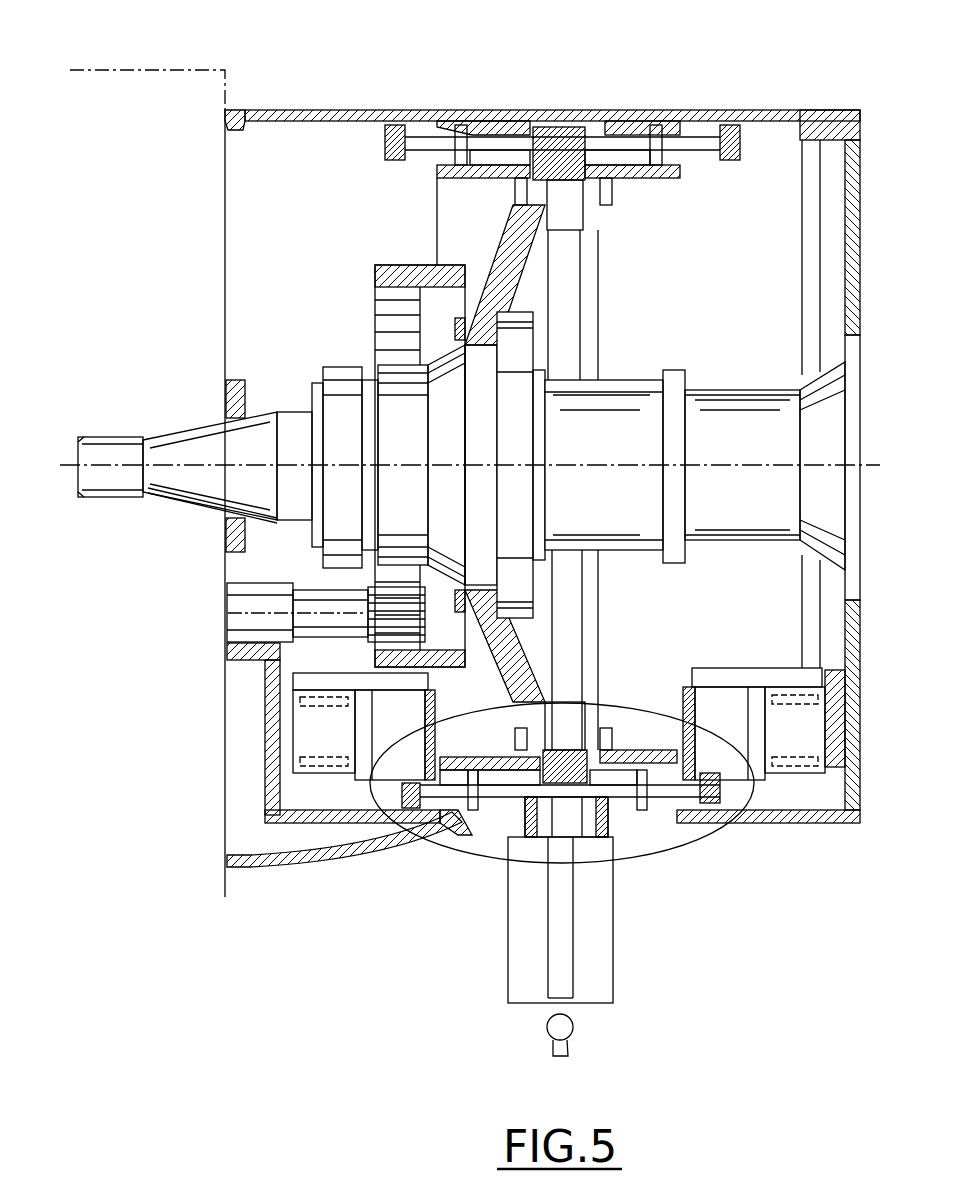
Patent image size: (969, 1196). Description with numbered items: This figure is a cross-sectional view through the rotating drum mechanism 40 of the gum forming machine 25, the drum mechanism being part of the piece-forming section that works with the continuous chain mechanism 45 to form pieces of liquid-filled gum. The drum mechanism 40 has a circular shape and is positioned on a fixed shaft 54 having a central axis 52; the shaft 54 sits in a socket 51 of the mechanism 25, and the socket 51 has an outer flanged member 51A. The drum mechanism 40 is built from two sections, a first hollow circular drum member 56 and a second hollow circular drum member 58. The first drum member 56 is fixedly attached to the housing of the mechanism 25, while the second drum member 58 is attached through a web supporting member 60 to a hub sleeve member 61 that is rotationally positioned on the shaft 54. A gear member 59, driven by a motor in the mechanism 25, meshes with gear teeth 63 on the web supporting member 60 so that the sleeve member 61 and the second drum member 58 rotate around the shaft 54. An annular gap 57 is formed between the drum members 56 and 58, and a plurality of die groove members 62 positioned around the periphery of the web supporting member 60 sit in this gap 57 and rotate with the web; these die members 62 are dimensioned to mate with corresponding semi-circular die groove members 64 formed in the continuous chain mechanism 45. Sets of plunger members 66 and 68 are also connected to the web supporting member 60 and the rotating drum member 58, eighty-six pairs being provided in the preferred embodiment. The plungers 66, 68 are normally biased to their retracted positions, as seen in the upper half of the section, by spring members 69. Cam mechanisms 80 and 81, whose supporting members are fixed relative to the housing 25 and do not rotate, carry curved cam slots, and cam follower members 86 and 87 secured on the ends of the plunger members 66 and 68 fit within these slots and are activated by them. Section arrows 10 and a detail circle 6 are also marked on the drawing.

The gum forming machine 25 is at (187, 66).
The first hollow circular drum member 56 is at (336, 112).
The second hollow circular drum member 58 is at (758, 115).
The annular gap 57 is at (557, 98).
The plunger member 66 is at (428, 133).
The spring member 69 is at (468, 130).
The die groove member 62 is at (556, 145).
The plunger member 68 is at (680, 137).
The web supporting member 60 is at (513, 252).
The gear teeth 63 is at (395, 288).
The hub sleeve member 61 is at (620, 410).
The outer flanged member 51A is at (245, 382).
The fixed shaft 54 is at (182, 438).
The central axis 52 is at (96, 470).
The socket 51 is at (187, 505).
The gear member 59 is at (387, 603).
The cam mechanism 80 is at (380, 787).
The cam mechanism 81 is at (748, 783).
The cam follower member 86 is at (423, 758).
The cam follower member 87 is at (707, 777).
The detail circle FIG. 6 is at (705, 718).
The semi-circular die groove member 64 is at (548, 825).
The continuous chain mechanism 45 is at (507, 895).
The rotating drum mechanism 40 is at (280, 868).
The section arrows 10 is at (393, 838).